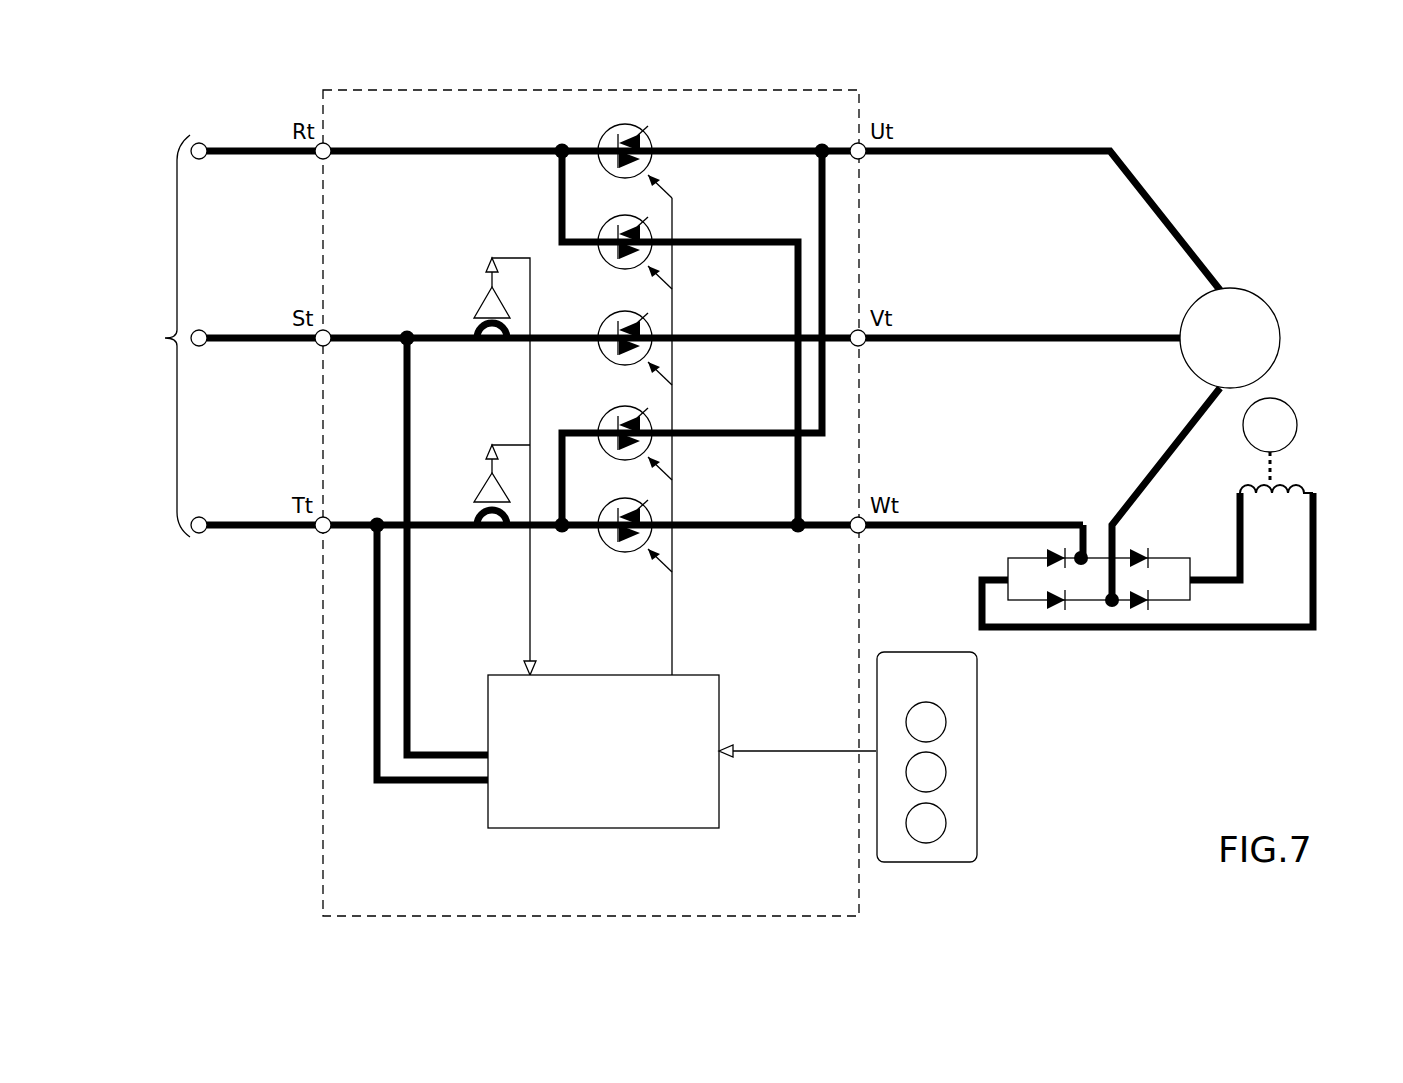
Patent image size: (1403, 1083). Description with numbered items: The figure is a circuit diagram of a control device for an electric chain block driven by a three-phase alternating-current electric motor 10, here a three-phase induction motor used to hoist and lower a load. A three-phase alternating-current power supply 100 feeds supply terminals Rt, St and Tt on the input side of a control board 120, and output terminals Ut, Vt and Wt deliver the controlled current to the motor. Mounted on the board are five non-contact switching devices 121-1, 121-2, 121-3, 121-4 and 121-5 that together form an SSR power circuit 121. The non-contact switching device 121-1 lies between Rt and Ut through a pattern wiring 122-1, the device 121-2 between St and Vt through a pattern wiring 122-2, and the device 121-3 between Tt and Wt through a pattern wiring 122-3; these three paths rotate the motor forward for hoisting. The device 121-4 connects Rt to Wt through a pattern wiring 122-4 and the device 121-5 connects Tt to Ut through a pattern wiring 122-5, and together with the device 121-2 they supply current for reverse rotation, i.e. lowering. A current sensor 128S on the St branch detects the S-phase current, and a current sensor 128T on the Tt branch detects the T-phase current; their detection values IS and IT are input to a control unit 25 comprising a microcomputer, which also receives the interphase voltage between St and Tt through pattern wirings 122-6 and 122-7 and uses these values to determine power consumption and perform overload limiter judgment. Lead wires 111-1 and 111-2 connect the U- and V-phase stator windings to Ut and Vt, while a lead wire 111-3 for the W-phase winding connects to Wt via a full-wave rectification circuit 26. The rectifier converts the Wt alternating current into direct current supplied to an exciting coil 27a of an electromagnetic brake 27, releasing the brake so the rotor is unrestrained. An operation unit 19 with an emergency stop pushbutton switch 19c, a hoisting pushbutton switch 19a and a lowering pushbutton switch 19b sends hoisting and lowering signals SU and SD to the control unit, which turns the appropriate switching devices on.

The three-phase alternating-current power supply 100 is at (159, 336).
The control board 120 is at (694, 90).
The SSR power circuit 121 is at (676, 356).
The non-contact switching device 121-1 is at (649, 128).
The non-contact switching device 121-2 is at (649, 315).
The non-contact switching device 121-3 is at (649, 502).
The non-contact switching device 121-4 is at (649, 219).
The non-contact switching device 121-5 is at (649, 410).
The pattern wiring 122-1 is at (366, 149).
The pattern wiring 122-2 is at (366, 336).
The pattern wiring 122-3 is at (359, 523).
The pattern wiring 122-4 is at (802, 378).
The pattern wiring 122-5 is at (828, 256).
The pattern wiring 122-6 is at (406, 626).
The pattern wiring 122-7 is at (376, 666).
The current sensor 128S is at (494, 344).
The current sensor 128T is at (494, 531).
The lead wire 111-1 is at (986, 151).
The lead wire 111-2 is at (986, 338).
The lead wire 111-3 is at (1118, 508).
The three-phase alternating-current electric motor 10 is at (1264, 300).
The electromagnetic brake 27 is at (1306, 412).
The exciting coil 27a is at (1278, 503).
The full-wave rectification circuit 26 is at (1088, 606).
The control unit 25 is at (603, 830).
The operation unit 19 is at (972, 757).
The hoisting pushbutton switch 19a is at (946, 774).
The lowering pushbutton switch 19b is at (946, 824).
The emergency stop pushbutton switch 19c is at (946, 718).